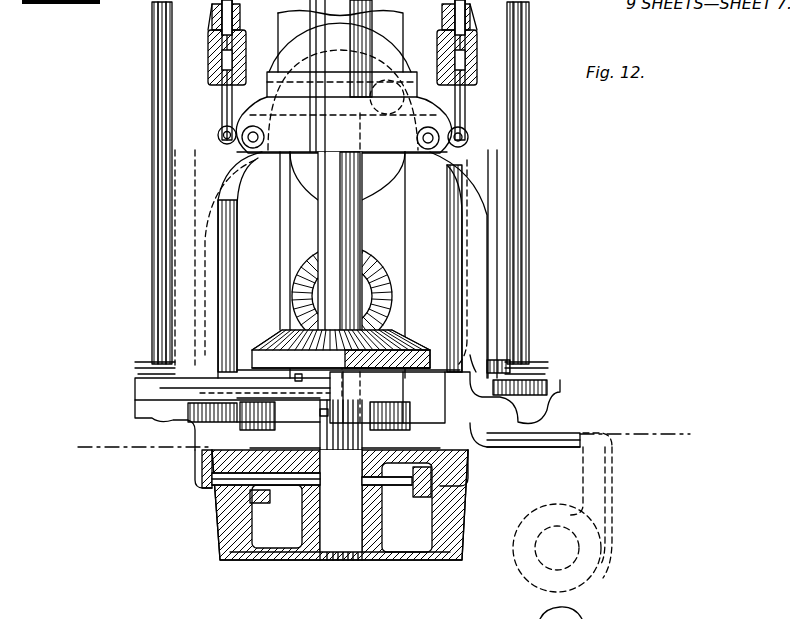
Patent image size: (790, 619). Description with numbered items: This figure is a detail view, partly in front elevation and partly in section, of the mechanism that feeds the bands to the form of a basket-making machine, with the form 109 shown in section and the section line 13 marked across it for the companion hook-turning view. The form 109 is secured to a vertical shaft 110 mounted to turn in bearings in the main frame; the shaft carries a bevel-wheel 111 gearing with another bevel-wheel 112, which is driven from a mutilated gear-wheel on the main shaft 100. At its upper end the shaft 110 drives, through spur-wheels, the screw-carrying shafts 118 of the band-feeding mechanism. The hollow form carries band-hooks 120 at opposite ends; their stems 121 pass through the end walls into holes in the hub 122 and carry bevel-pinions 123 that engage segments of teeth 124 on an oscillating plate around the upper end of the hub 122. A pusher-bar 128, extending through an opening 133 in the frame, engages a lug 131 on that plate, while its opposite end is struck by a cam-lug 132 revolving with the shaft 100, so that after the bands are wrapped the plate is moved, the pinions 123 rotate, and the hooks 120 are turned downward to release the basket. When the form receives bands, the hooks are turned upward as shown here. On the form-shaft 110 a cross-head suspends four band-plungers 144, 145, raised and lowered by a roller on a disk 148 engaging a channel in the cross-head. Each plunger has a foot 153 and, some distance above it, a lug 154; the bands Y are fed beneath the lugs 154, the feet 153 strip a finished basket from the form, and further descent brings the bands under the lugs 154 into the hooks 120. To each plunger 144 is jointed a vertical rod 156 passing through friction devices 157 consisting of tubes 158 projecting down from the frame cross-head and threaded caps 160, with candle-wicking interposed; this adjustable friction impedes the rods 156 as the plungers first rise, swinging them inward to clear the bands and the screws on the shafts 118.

The main shaft 100 is at (594, 608).
The form 109 is at (365, 563).
The vertical shaft 110 is at (342, 265).
The bevel-wheel 111 is at (268, 345).
The bevel-wheel 112 is at (315, 268).
The screw-carrying shafts 118 is at (153, 99).
The band-hooks 120 is at (206, 476).
The stems 121 is at (240, 495).
The hub 122 is at (312, 518).
The bevel-pinions 123 is at (266, 492).
The segments of teeth 124 is at (300, 455).
The pusher-bar 128 is at (565, 447).
The lug 131 is at (312, 428).
The cam-lug 132 is at (598, 470).
The opening 133 is at (562, 437).
The band-plungers 144 is at (231, 250).
The band-plungers 145 is at (475, 205).
The disk 148 is at (344, 95).
The foot 153 is at (205, 442).
The lug 154 is at (477, 370).
The vertical rod 156 is at (222, 98).
The friction devices 157 is at (329, 17).
The tubes 158 is at (240, 18).
The caps 160 is at (208, 75).
The section line 13 is at (382, 444).
The bands Y is at (540, 386).